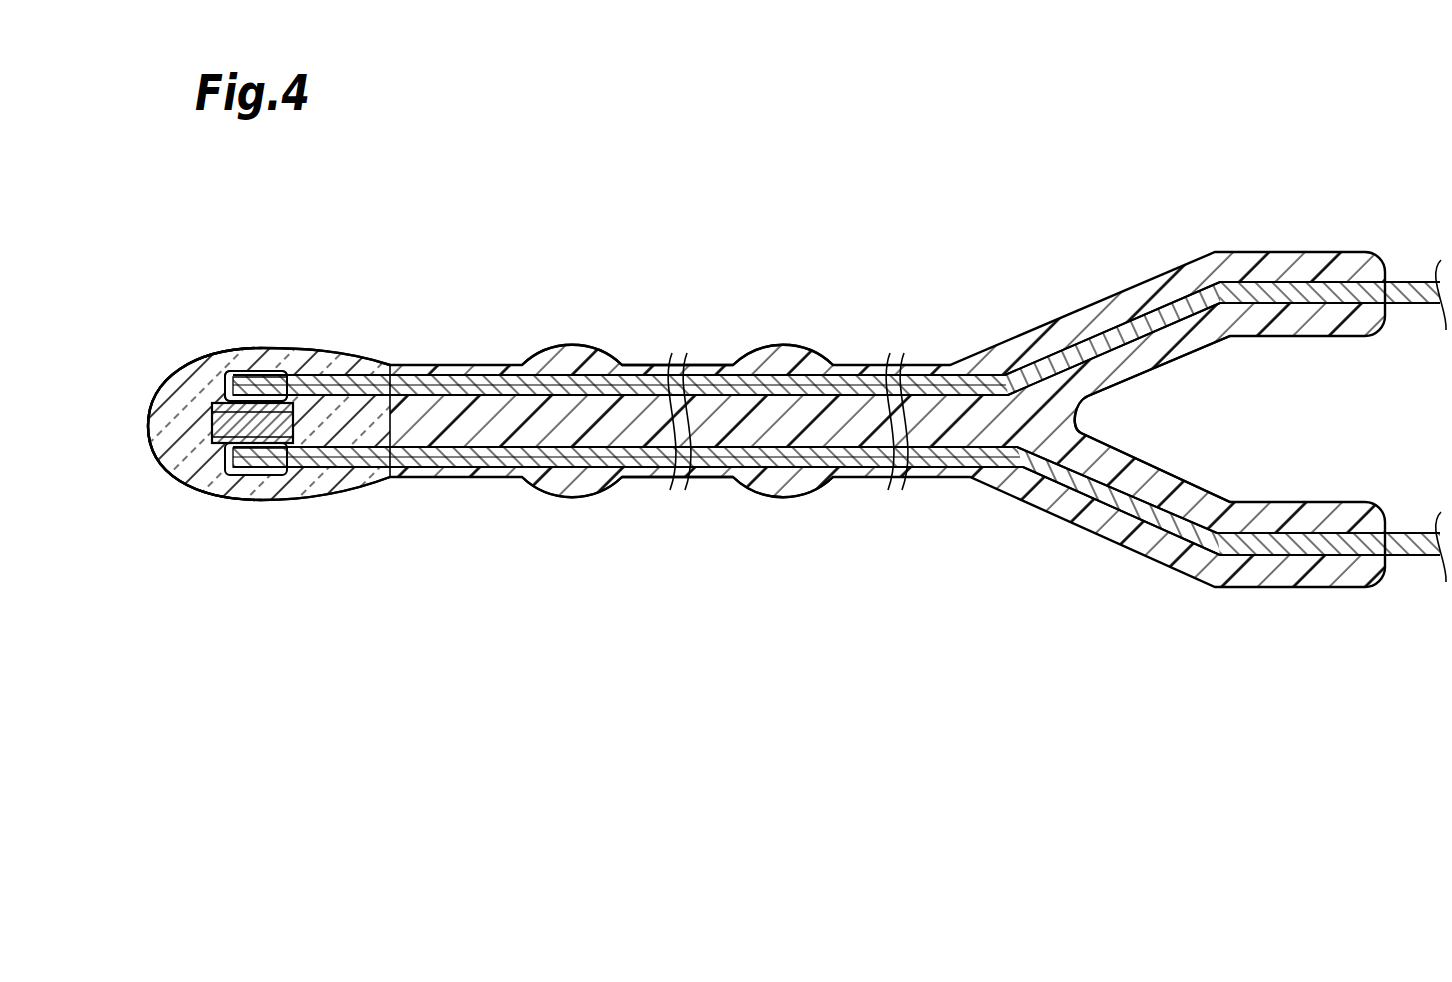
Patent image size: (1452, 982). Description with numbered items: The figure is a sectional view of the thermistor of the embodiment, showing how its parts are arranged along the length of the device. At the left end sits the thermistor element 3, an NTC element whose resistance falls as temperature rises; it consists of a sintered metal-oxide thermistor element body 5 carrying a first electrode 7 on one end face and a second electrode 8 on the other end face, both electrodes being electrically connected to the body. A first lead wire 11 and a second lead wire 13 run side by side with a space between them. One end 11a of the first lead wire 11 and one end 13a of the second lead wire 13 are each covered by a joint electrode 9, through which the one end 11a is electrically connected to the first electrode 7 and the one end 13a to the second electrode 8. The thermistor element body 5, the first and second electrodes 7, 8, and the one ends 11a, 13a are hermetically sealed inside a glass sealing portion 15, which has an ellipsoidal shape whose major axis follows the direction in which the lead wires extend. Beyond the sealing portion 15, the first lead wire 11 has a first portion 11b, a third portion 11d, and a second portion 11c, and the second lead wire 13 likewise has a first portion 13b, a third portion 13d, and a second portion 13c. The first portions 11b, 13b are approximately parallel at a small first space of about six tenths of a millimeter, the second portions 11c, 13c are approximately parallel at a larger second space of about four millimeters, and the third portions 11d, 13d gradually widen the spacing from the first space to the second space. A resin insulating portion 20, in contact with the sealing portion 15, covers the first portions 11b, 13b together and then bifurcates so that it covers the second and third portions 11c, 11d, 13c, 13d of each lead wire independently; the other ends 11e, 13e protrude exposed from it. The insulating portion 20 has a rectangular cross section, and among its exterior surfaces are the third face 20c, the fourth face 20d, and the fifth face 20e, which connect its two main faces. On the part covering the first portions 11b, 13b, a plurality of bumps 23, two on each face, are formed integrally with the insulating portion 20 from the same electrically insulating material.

The thermistor element 3 is at (205, 395).
The thermistor element body 5 is at (253, 422).
The first electrode 7 is at (221, 377).
The second electrode 8 is at (224, 450).
The joint electrode 9 is at (270, 370).
The first lead wire 11 is at (490, 374).
The one end of the first lead wire 11a is at (310, 388).
The first portion of the first lead wire 11b is at (857, 374).
The second portion of the first lead wire 11c is at (1270, 283).
The third portion of the first lead wire 11d is at (1056, 352).
The other end of the first lead wire 11e is at (1416, 281).
The second lead wire 13 is at (493, 470).
The one end of the second lead wire 13a is at (300, 464).
The first portion of the second lead wire 13b is at (865, 468).
The second portion of the second lead wire 13c is at (1270, 555).
The third portion of the second lead wire 13d is at (1113, 507).
The other end of the second lead wire 13e is at (1433, 555).
The sealing portion 15 is at (152, 462).
The insulating portion 20 is at (1010, 503).
The third face 20c is at (643, 362).
The fourth face 20d is at (720, 477).
The fifth face 20e is at (1285, 337).
The bump 23 is at (572, 348).